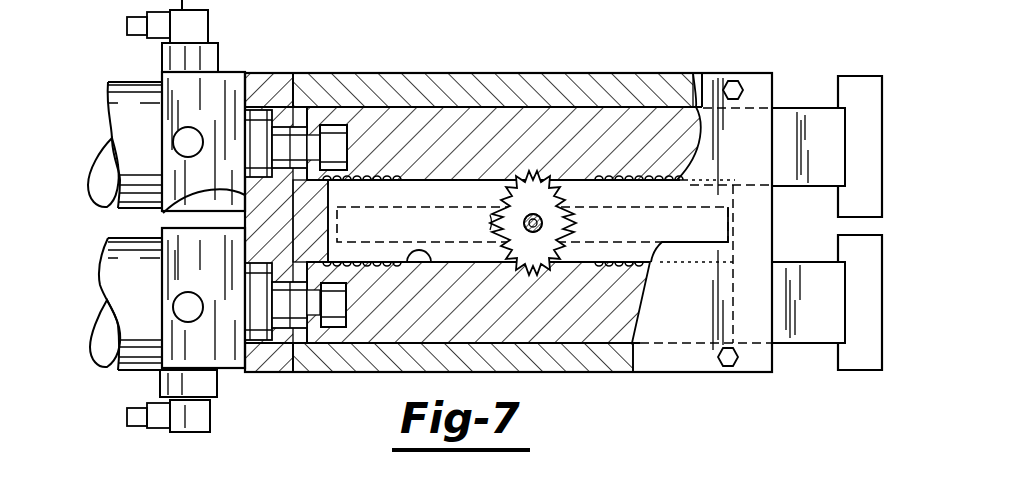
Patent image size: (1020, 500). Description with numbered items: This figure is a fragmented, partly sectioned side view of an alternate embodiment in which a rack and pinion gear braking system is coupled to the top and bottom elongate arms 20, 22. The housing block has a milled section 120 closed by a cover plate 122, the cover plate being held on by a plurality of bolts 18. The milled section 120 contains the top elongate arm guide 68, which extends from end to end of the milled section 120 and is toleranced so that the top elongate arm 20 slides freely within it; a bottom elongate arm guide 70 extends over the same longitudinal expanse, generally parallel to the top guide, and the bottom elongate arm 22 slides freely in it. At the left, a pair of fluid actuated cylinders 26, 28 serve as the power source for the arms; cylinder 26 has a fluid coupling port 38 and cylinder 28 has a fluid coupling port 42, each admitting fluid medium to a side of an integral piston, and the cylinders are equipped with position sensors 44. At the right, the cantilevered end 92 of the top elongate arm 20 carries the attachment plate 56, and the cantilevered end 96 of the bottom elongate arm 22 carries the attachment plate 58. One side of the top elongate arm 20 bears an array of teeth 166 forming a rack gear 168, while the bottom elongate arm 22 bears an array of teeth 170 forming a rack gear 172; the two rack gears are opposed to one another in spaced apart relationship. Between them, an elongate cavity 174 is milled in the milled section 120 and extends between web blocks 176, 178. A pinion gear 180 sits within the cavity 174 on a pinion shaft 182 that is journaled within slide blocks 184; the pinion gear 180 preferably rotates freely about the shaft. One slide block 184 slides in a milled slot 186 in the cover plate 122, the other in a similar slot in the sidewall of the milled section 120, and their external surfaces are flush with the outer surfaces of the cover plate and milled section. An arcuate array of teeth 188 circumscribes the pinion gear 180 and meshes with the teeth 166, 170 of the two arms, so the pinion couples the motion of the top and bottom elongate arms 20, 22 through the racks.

The bolts 18 is at (736, 367).
The top elongate arm 20 is at (815, 140).
The bottom elongate arm 22 is at (838, 301).
The fluid actuated cylinder 26 is at (122, 82).
The fluid actuated cylinder 28 is at (98, 285).
The fluid coupling port 38 is at (202, 132).
The fluid coupling port 42 is at (176, 298).
The position sensor 44 is at (186, 432).
The attachment plate 56 is at (863, 76).
The attachment plate 58 is at (852, 372).
The top elongate arm guide 68 is at (660, 106).
The bottom elongate arm guide 70 is at (582, 348).
The cantilevered end 92 is at (795, 108).
The cantilevered end 96 is at (800, 345).
The milled section 120 is at (322, 73).
The cover plate 122 is at (752, 73).
The teeth 166 is at (405, 176).
The rack gear 168 is at (628, 183).
The teeth 170 is at (387, 269).
The rack gear 172 is at (427, 264).
The cavity 174 is at (389, 238).
The web block 176 is at (163, 213).
The web block 178 is at (774, 222).
The pinion gear 180 is at (535, 213).
The pinion shaft 182 is at (532, 213).
The slide block 184 is at (523, 247).
The milled slot 186 is at (678, 183).
The teeth 188 is at (490, 218).